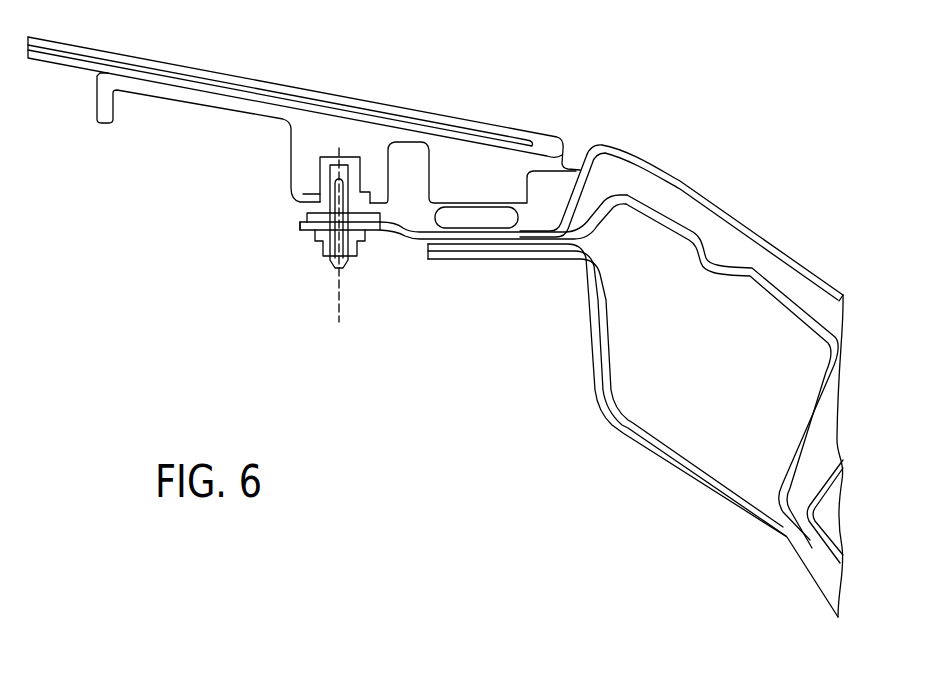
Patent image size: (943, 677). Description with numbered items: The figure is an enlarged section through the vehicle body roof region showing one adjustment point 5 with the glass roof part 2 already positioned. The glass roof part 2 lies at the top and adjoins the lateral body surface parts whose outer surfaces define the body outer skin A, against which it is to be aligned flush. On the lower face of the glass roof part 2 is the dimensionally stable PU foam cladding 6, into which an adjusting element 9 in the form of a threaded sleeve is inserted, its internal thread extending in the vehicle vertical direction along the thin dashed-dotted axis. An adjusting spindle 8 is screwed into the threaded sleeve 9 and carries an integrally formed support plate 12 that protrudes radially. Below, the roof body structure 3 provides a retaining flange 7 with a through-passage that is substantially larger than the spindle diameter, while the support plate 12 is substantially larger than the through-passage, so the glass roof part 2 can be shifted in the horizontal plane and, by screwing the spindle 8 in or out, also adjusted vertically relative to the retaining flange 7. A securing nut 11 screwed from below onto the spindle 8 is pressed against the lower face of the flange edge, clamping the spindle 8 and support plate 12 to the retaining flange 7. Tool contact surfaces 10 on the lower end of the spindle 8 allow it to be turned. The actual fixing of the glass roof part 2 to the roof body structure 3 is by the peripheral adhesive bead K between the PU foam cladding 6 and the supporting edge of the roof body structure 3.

The glass roof part 2 is at (274, 86).
The roof body structure 3 is at (590, 364).
The adjustment point 5 is at (278, 219).
The PU foam cladding 6 is at (291, 147).
The retaining flange 7 is at (384, 241).
The adjusting spindle 8 is at (337, 264).
The adjusting element 9 is at (320, 191).
The tool contact surfaces 10 is at (338, 270).
The securing nut 11 is at (316, 248).
The support plate 12 is at (372, 213).
The body outer skin A is at (693, 185).
The adhesive bead K is at (480, 217).